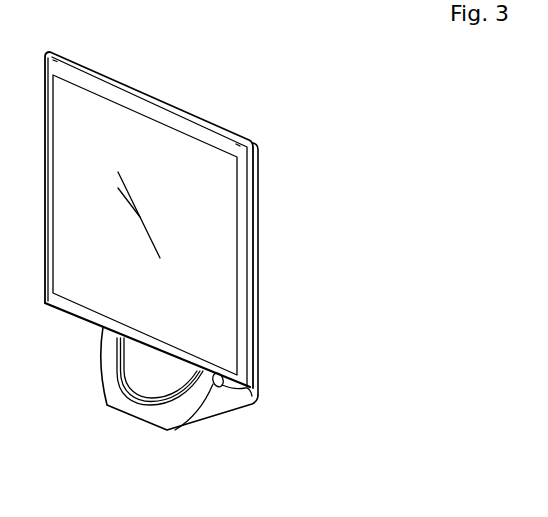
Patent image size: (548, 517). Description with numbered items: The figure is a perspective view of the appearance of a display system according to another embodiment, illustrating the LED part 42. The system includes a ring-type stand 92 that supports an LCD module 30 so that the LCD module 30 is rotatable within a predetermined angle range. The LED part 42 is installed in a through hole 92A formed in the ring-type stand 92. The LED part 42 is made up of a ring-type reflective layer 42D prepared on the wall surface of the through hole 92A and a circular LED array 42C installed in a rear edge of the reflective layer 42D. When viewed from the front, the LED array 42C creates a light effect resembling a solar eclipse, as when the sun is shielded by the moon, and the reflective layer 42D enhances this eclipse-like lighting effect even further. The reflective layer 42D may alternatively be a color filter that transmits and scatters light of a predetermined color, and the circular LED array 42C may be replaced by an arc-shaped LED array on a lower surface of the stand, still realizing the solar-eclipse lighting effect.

The LCD module 30 is at (259, 278).
The ring-type stand 92 is at (233, 398).
The through hole 92A is at (140, 370).
The LED part 42 is at (135, 423).
The circular LED array 42C is at (150, 400).
The ring-type reflective layer 42D is at (168, 403).